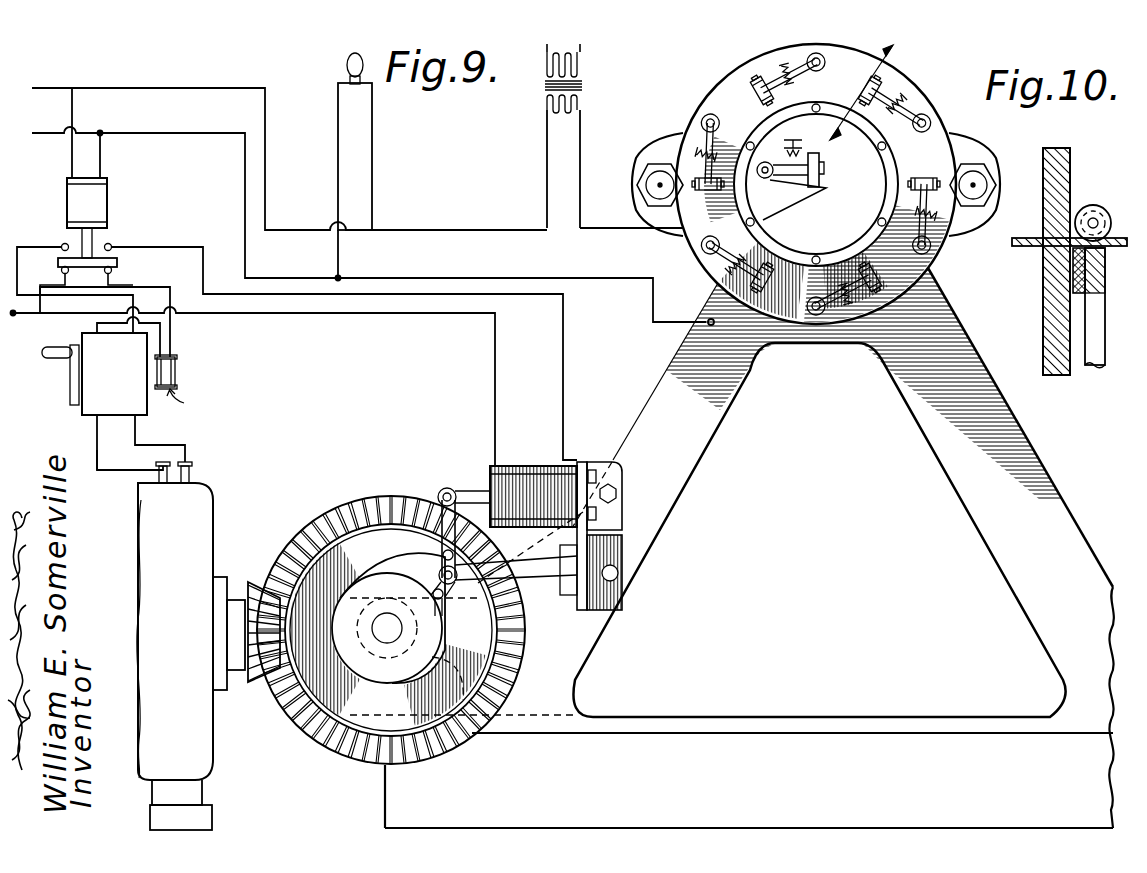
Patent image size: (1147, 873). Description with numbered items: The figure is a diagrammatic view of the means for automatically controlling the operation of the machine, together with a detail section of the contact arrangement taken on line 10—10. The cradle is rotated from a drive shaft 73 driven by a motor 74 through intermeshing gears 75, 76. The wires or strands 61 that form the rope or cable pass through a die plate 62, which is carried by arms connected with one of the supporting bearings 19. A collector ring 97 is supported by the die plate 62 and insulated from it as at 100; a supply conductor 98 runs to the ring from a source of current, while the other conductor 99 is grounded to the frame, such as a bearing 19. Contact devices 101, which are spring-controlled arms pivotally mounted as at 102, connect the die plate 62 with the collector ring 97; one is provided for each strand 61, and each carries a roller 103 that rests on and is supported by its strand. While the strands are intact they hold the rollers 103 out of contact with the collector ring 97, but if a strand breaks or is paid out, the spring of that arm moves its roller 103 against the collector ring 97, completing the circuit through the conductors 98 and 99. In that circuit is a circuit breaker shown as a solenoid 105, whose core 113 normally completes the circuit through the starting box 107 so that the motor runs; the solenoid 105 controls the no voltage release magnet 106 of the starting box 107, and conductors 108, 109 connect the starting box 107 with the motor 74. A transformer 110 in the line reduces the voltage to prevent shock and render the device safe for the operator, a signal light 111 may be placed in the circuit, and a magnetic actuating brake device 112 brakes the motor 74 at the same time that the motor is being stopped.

In FIG. 9, the section line 10— 10 is at (876, 99).
In FIG. 9, the bearing 19 is at (700, 430).
In FIG. 9, the wires or strands 61 is at (860, 125).
In FIG. 10, the wires or strands 61 is at (1020, 246).
In FIG. 10, the die plate 62 is at (1054, 160).
In FIG. 9, the drive shaft 73 is at (400, 633).
In FIG. 9, the motor 74 is at (180, 522).
In FIG. 9, the gear 75 is at (248, 600).
In FIG. 9, the gear 76 is at (378, 495).
In FIG. 9, the collector ring 97 is at (890, 160).
In FIG. 10, the collector ring 97 is at (1097, 287).
In FIG. 9, the supply conductor 98 is at (601, 229).
In FIG. 9, the conductor 99 is at (475, 277).
In FIG. 10, the insulation 100 is at (1062, 306).
In FIG. 9, the contact devices 101 is at (905, 97).
In FIG. 9, the pivot 102 is at (918, 118).
In FIG. 9, the roller 103 is at (858, 74).
In FIG. 10, the roller 103 is at (1099, 207).
In FIG. 9, the solenoid circuit breaker 105 is at (95, 195).
In FIG. 9, the no voltage release magnet 106 is at (178, 372).
In FIG. 9, the starting box 107 is at (90, 361).
In FIG. 9, the conductor 108 is at (90, 470).
In FIG. 9, the conductor 109 is at (170, 450).
In FIG. 9, the transformer 110 is at (545, 84).
In FIG. 9, the signal light 111 is at (346, 80).
In FIG. 9, the magnetic actuating brake device 112 is at (521, 470).
In FIG. 9, the core 113 is at (118, 263).